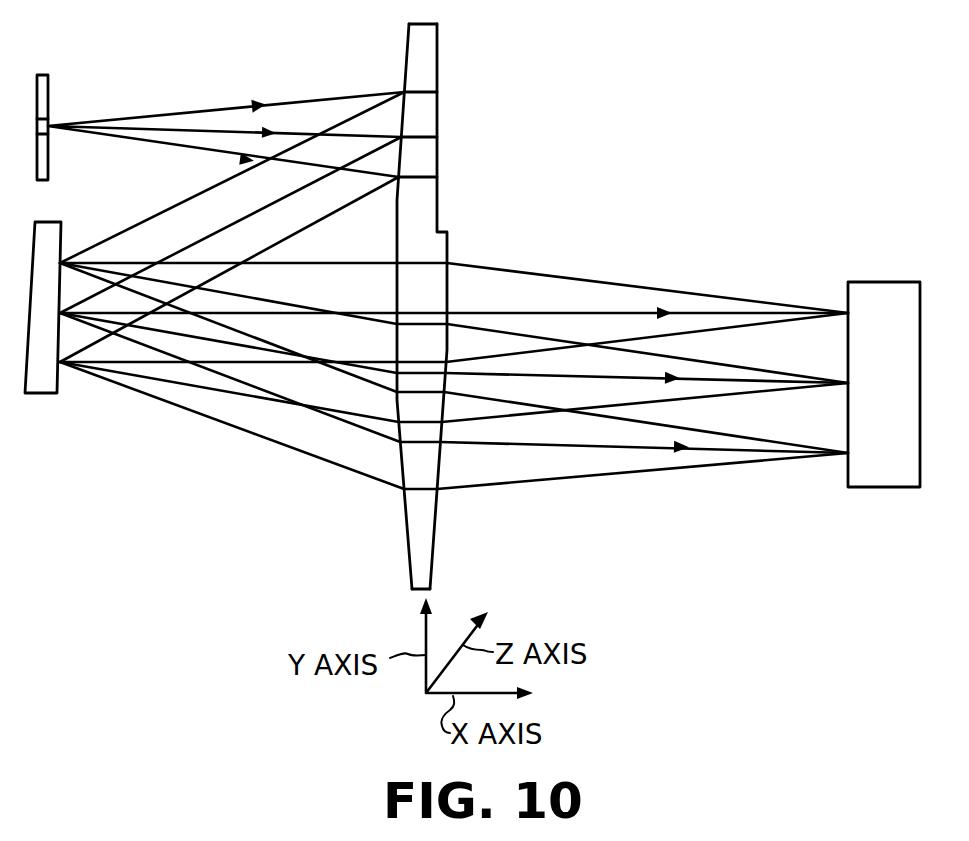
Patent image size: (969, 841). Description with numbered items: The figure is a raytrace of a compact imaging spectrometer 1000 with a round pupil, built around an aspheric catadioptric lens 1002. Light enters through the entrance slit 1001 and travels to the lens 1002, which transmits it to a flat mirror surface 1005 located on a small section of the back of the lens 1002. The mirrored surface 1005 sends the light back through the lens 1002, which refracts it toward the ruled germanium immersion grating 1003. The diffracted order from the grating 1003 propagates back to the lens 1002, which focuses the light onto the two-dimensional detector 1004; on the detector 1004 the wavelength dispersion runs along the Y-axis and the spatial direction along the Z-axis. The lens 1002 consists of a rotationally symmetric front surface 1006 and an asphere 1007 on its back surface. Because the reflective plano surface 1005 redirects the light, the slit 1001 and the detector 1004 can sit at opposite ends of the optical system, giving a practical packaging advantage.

The compact imaging spectrometer 1000 is at (563, 168).
The entrance slit 1001 is at (47, 102).
The aspheric catadioptric lens 1002 is at (403, 309).
The germanium immersion grating 1003 is at (42, 395).
The detector 1004 is at (873, 281).
The flat mirror surface 1005 is at (438, 115).
The front surface 1006 is at (403, 507).
The asphere 1007 is at (438, 503).